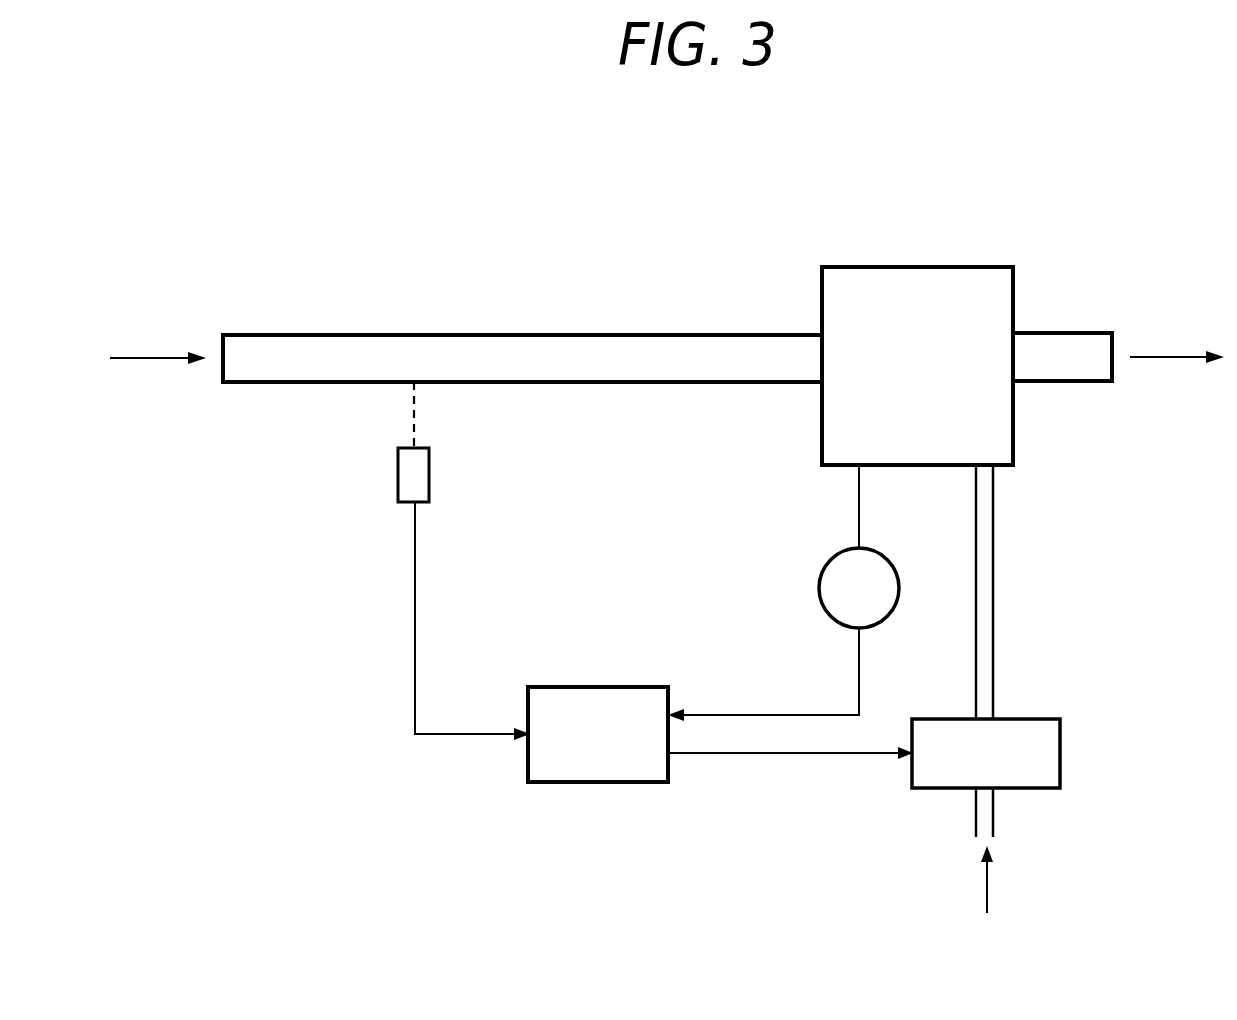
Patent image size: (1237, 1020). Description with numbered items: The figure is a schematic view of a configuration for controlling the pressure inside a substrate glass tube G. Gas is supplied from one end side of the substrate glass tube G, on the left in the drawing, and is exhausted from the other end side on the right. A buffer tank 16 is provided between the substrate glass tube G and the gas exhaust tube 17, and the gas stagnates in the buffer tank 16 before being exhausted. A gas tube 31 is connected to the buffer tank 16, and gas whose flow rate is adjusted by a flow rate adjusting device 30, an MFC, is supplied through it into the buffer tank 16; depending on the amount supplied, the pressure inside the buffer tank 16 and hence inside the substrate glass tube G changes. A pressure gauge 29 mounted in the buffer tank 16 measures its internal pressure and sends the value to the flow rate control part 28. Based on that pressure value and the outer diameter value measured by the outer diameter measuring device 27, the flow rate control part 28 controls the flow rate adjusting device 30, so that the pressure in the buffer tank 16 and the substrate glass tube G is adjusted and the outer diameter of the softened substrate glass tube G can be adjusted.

The substrate glass tube G is at (543, 355).
The buffer tank 16 is at (930, 322).
The gas exhaust tube 17 is at (1073, 355).
The outer diameter measuring device 27 is at (416, 481).
The flow rate control part 28 is at (617, 750).
The pressure gauge 29 is at (836, 578).
The flow rate adjusting device 30 is at (1060, 748).
The gas tube 31 is at (986, 598).